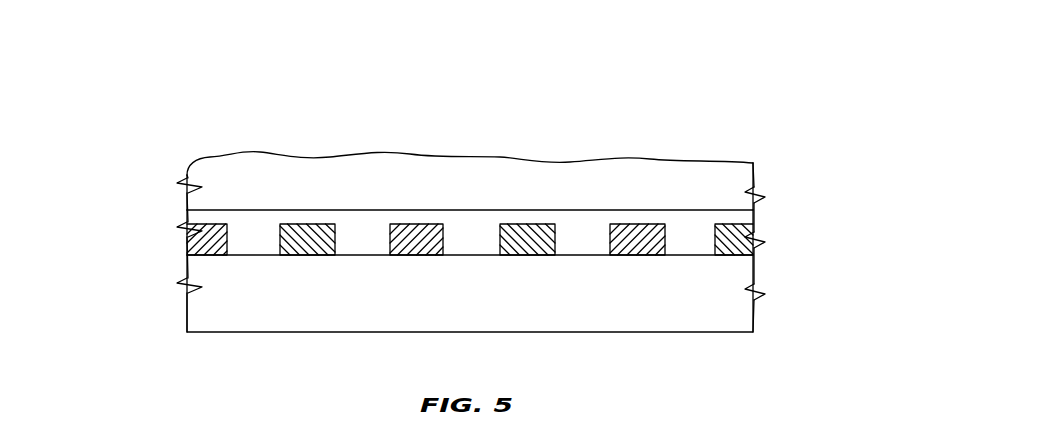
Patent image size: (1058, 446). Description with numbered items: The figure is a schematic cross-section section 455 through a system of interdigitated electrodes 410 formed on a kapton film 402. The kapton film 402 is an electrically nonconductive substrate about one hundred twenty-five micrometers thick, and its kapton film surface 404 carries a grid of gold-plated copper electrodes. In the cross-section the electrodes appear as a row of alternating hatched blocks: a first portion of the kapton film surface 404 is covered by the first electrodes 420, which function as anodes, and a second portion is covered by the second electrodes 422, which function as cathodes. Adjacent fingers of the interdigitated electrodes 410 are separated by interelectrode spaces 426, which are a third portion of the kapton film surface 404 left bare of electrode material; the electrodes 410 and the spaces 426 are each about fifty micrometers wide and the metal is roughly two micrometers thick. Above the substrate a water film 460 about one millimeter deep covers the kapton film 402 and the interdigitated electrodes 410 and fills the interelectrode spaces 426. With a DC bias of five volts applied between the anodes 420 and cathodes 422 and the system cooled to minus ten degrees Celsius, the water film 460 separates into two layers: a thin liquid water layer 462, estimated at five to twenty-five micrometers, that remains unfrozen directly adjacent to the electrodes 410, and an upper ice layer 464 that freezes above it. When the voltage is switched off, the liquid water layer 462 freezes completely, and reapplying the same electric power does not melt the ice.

The cross-section section 455 is at (182, 62).
The water film 460 is at (150, 206).
The upper ice layer 464 is at (525, 167).
The liquid water layer 462 is at (755, 220).
The interdigitated electrodes 410 is at (777, 227).
The first electrodes 420 is at (190, 244).
The second electrodes 422 is at (303, 256).
The interelectrode spaces 426 is at (272, 241).
The kapton film surface 404 is at (577, 257).
The kapton film 402 is at (385, 322).